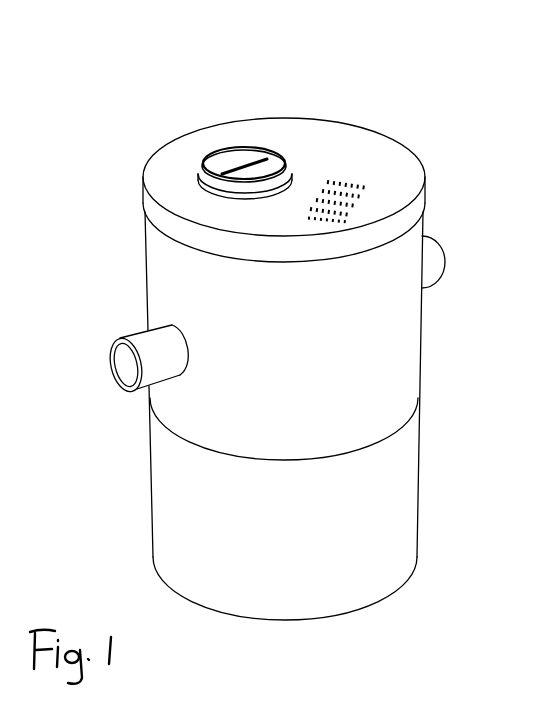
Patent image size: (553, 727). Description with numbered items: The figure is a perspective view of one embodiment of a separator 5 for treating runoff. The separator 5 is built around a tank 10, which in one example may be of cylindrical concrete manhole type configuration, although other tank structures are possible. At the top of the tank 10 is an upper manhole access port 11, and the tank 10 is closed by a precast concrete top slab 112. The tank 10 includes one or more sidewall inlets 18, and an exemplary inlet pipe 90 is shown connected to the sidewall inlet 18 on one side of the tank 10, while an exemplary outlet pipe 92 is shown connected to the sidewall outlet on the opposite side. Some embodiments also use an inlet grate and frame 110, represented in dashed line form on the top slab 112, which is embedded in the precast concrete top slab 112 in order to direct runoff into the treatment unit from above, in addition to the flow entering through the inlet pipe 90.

The separator 5 is at (474, 83).
The tank 10 is at (487, 170).
The upper manhole access port 11 is at (143, 102).
The sidewall inlet 18 is at (62, 265).
The inlet pipe 90 is at (43, 320).
The outlet pipe 92 is at (525, 320).
The inlet grate and frame 110 is at (362, 67).
The precast concrete top slab 112 is at (323, 68).